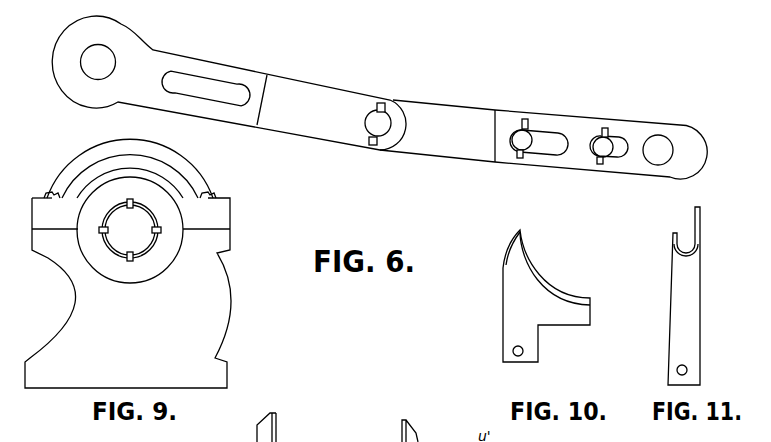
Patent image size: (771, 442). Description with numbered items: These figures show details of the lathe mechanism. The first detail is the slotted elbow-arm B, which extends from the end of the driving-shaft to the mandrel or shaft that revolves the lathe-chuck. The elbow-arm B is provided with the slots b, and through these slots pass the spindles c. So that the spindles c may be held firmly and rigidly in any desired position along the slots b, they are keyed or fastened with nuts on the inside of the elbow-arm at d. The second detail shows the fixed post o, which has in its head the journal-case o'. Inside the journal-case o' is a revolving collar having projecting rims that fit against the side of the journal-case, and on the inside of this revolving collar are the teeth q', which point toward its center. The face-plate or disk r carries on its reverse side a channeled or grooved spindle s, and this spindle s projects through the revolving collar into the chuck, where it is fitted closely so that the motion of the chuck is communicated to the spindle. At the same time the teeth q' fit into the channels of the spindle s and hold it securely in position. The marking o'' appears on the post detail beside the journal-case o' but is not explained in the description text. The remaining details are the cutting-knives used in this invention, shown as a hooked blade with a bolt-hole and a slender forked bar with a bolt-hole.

In FIG. 6, the wrench arm / lever B is at (379, 97).
In FIG. 6, the slots in arm b is at (395, 114).
In FIG. 6, the pins c is at (489, 133).
In FIG. 6, the pin center lines d is at (382, 104).
In FIG. 9, the bearing standard body o is at (128, 290).
In FIG. 9, the bearing cap half o' is at (54, 212).
In FIG. 9, the bearing hub o'' is at (130, 230).
In FIG. 9, the arched cap ribs r is at (130, 168).
In FIG. 9, the spindle bore s is at (130, 230).
In FIG. 9, the set screws q' is at (134, 225).